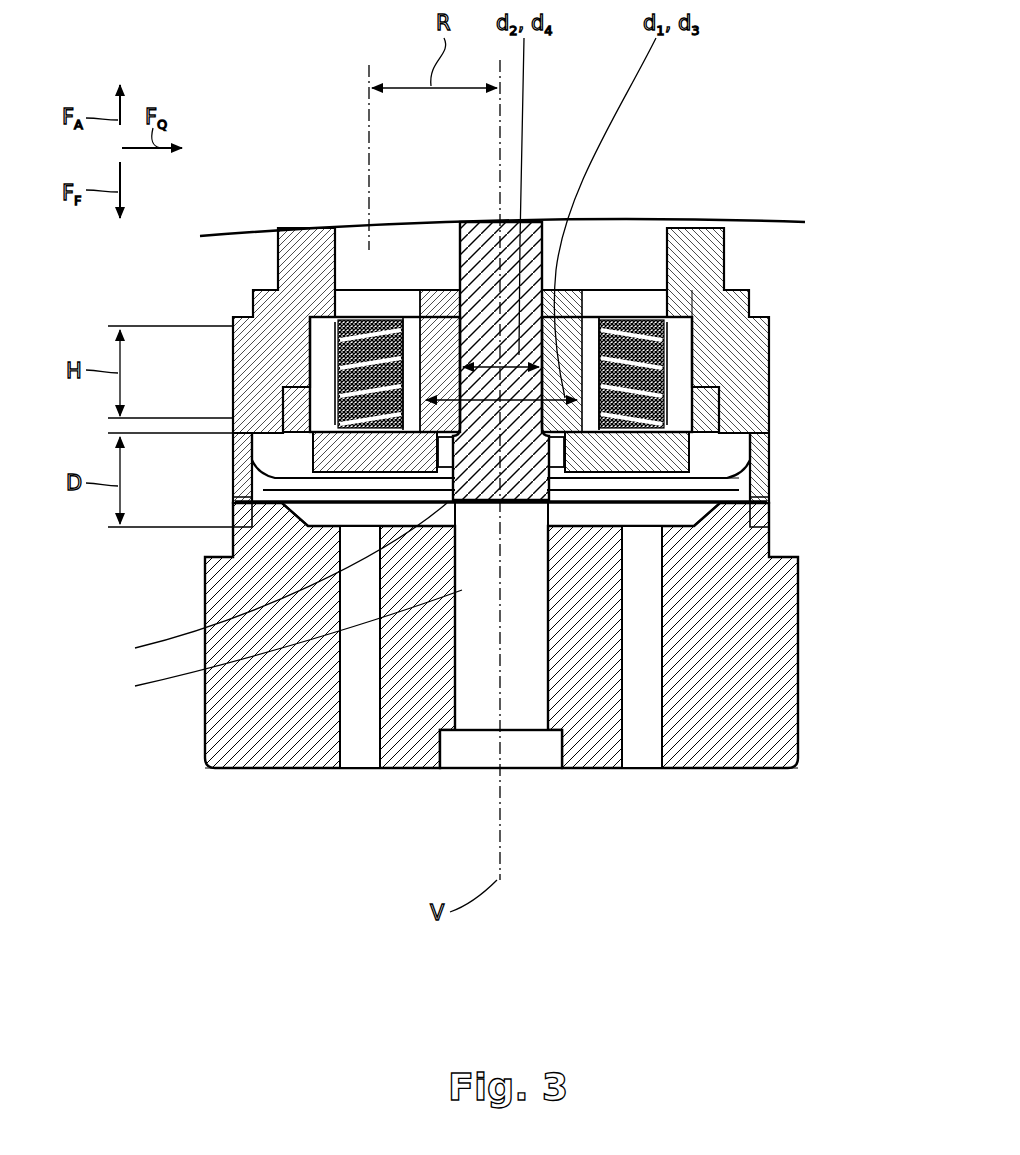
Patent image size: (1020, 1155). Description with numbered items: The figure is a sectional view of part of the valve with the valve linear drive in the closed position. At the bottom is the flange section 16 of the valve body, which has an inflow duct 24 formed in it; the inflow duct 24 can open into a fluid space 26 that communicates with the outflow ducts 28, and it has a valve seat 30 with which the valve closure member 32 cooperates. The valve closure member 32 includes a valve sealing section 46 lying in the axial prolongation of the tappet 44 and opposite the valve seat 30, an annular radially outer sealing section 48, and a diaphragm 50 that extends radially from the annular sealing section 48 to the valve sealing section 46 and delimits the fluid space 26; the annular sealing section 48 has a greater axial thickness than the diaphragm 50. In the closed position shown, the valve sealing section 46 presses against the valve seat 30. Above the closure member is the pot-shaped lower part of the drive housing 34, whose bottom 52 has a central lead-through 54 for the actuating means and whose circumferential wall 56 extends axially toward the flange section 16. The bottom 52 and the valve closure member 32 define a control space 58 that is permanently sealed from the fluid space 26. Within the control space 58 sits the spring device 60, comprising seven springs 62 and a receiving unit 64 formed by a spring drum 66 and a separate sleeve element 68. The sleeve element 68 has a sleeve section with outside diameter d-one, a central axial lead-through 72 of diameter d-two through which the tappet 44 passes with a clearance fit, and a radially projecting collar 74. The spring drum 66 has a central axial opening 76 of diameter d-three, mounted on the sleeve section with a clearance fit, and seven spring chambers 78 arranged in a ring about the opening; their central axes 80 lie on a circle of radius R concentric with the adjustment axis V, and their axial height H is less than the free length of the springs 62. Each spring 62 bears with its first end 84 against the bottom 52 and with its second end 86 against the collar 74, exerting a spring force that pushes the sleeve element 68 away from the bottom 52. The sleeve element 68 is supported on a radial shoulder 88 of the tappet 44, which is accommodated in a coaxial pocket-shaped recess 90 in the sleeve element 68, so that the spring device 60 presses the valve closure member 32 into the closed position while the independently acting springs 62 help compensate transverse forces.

The flange section 16 is at (182, 778).
The inflow duct 24 is at (480, 705).
The fluid space 26 is at (700, 535).
The outflow ducts 28 is at (357, 735).
The valve seat 30 is at (525, 505).
The valve closure member 32 is at (228, 468).
The drive housing 34 is at (262, 314).
The tappet 44 is at (540, 240).
The valve sealing section 46 is at (470, 545).
The annular radially outer sealing section 48 is at (247, 503).
The diaphragm 50 is at (687, 517).
The bottom 52 is at (646, 300).
The central lead-through 54 is at (568, 320).
The circumferential wall 56 is at (252, 370).
The control space 58 is at (282, 410).
The spring device 60 is at (334, 306).
The springs 62 is at (703, 370).
The receiving unit 64 is at (388, 308).
The spring drum 66 is at (687, 407).
The sleeve element 68 is at (432, 300).
The central axial lead-through 72 is at (485, 340).
The collar 74 is at (690, 440).
The central axial opening 76 is at (600, 320).
The spring chambers 78 is at (697, 330).
The central axes 80 is at (369, 105).
The first end 84 is at (695, 285).
The second end 86 is at (690, 463).
The radial shoulder 88 is at (286, 643).
The pocket-shaped recess 90 is at (278, 582).